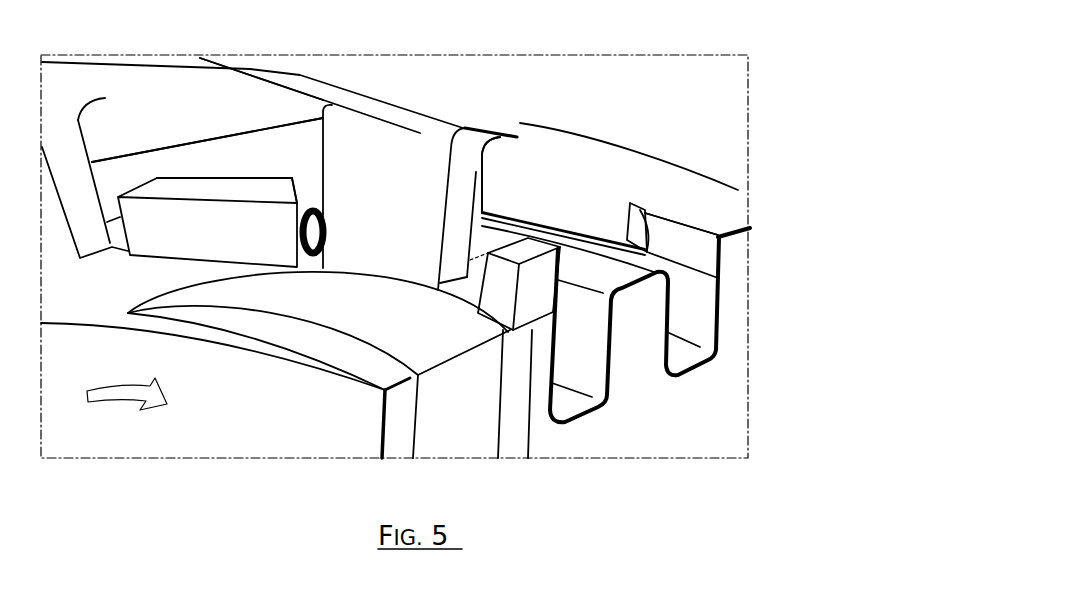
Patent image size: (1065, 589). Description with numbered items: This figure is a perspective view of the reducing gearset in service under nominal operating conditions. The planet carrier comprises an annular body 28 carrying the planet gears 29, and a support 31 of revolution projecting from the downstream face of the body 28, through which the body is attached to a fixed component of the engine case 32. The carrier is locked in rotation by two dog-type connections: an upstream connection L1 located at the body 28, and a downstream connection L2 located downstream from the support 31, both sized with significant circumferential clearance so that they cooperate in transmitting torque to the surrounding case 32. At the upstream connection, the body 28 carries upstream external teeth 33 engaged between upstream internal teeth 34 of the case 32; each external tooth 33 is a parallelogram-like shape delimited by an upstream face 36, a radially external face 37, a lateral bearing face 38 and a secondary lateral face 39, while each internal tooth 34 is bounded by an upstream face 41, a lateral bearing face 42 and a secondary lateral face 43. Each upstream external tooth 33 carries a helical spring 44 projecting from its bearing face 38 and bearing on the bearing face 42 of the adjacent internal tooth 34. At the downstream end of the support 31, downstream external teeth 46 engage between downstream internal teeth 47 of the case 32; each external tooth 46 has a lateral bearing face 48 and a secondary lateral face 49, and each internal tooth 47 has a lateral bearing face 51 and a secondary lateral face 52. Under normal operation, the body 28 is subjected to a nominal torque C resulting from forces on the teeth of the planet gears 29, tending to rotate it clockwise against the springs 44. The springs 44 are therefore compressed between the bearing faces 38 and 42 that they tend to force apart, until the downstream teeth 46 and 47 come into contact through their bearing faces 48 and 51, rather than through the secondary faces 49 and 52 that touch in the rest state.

The annular body 28 is at (213, 385).
The planet gears 29 is at (319, 365).
The support 31 is at (700, 367).
The engine case 32 is at (357, 85).
The upstream external teeth 33 is at (207, 222).
The upstream internal teeth 34 is at (394, 197).
The upstream face 36 is at (153, 212).
The radially external face 37 is at (174, 190).
The lateral bearing face 38 is at (305, 206).
The secondary lateral face 39 is at (117, 206).
The upstream face 41 is at (337, 145).
The lateral bearing face 42 is at (321, 167).
The secondary lateral face 43 is at (480, 168).
The helical spring 44 is at (295, 225).
The downstream external teeth 46 is at (697, 245).
The downstream internal teeth 47 is at (563, 238).
The lateral bearing face 48 is at (473, 197).
The secondary lateral face 49 is at (650, 240).
The lateral bearing face 51 is at (485, 212).
The secondary lateral face 52 is at (637, 223).
The nominal torque C is at (107, 388).
The upstream connection L1 is at (543, 303).
The downstream connection L2 is at (770, 252).